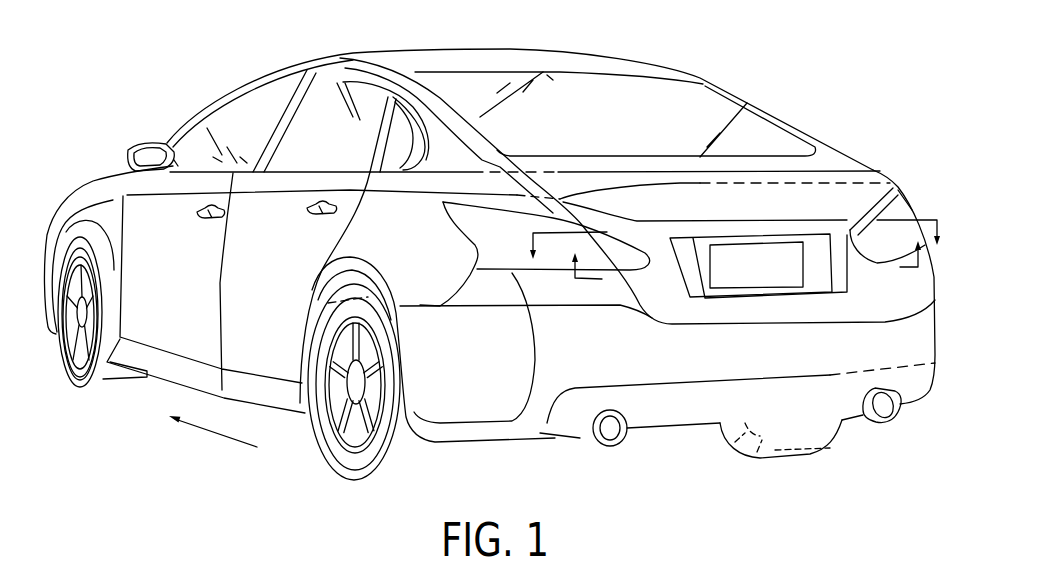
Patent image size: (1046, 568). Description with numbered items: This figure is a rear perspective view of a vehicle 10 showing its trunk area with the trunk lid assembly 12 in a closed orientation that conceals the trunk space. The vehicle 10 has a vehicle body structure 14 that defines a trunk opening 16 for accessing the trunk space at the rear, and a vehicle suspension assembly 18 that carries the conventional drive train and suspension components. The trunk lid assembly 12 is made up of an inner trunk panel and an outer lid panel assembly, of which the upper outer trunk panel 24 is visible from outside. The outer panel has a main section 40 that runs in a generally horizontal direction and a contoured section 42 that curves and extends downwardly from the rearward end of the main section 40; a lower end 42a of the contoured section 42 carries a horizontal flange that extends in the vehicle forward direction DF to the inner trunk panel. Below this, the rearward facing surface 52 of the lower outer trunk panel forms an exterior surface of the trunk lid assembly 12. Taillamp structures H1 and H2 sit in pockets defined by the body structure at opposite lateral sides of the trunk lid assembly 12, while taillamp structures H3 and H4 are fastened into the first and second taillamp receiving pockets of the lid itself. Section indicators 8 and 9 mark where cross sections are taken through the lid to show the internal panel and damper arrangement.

The vehicle 10 is at (503, 269).
The trunk lid assembly 12 is at (882, 162).
The vehicle body structure 14 is at (470, 44).
The trunk opening 16 is at (548, 196).
The vehicle suspension assembly 18 is at (337, 462).
The upper outer trunk panel 24 is at (757, 203).
The main section 40 is at (703, 205).
The contoured section 42 is at (747, 228).
The lower end 42a is at (693, 240).
The rearward facing surface 52 is at (848, 290).
The taillamp structure H1 is at (485, 226).
The taillamp structure H2 is at (907, 213).
The taillamp structure H3 is at (647, 257).
The taillamp structure H4 is at (856, 240).
The section line 8 is at (736, 243).
The section line 9 is at (736, 250).
The vehicle forward direction DF is at (218, 440).